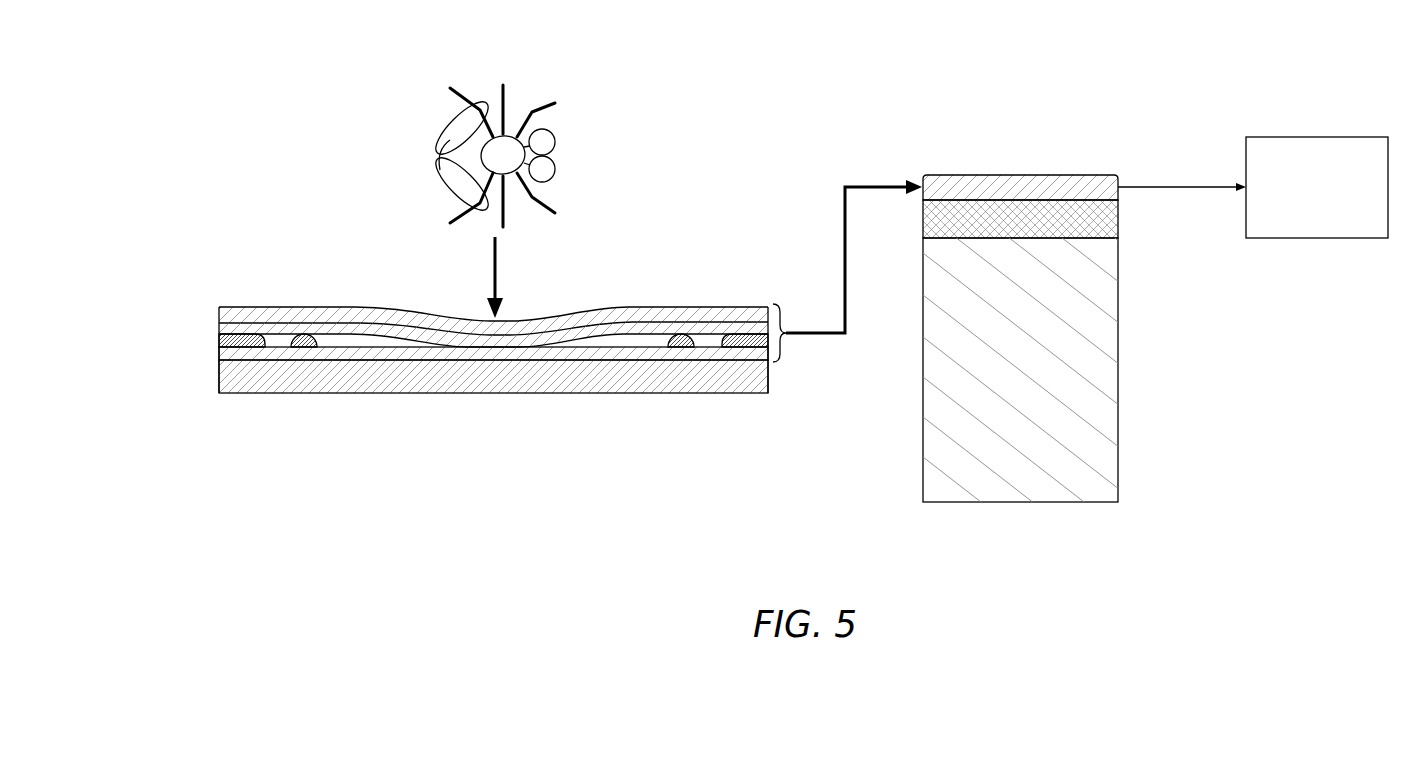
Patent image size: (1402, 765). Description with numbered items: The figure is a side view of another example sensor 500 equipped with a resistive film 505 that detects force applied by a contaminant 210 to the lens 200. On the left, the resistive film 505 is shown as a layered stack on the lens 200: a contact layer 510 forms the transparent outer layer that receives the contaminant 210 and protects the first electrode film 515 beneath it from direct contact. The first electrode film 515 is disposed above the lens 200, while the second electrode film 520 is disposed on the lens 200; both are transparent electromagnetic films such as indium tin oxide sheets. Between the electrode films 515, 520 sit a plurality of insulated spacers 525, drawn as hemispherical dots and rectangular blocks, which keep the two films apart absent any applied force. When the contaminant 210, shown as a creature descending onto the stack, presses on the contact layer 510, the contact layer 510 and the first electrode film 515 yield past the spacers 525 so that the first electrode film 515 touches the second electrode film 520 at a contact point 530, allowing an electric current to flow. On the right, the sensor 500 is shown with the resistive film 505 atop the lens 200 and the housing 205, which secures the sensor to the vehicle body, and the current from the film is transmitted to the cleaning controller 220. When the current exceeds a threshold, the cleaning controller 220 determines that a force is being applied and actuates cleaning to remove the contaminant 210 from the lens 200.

The lens 200 is at (768, 377).
The housing 205 is at (1118, 428).
The contaminant 210 is at (557, 150).
The cleaning controller 220 is at (1355, 137).
The sensor 500 is at (1079, 118).
The resistive film 505 is at (630, 241).
The contact layer 510 is at (272, 307).
The first electrode film 515 is at (218, 328).
The second electrode film 520 is at (218, 353).
The insulated spacers 525 is at (320, 340).
The contact point 530 is at (500, 347).